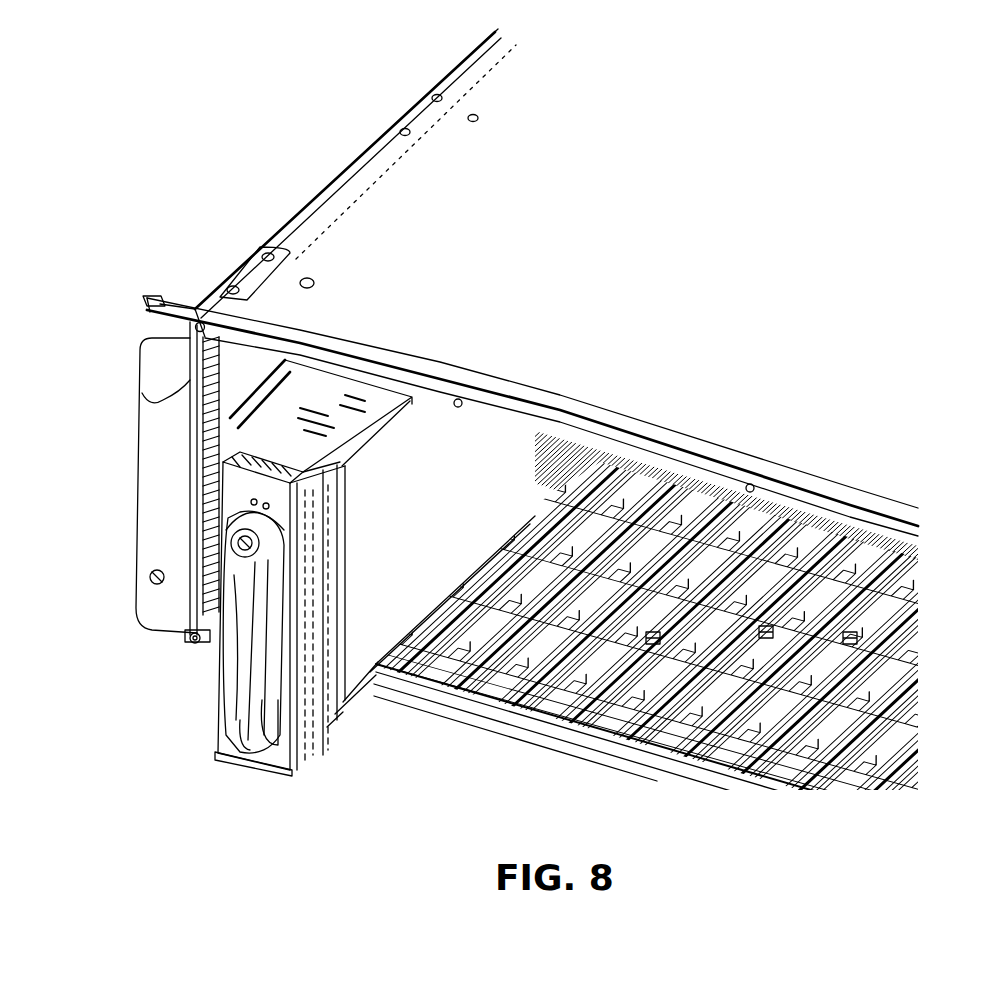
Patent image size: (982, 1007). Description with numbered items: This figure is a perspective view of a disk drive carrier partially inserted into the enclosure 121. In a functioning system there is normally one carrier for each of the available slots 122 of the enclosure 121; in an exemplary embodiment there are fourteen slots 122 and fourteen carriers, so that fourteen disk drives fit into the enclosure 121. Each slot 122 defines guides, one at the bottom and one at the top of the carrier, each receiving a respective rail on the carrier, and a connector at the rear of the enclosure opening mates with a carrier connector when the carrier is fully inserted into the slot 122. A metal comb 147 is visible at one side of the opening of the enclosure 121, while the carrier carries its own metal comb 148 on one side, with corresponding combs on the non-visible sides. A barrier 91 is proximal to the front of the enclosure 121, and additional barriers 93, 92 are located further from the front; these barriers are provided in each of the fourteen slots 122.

The enclosure 121 is at (333, 183).
The metal comb 147 is at (210, 433).
The metal comb 148 is at (310, 730).
The slot 122 is at (520, 690).
The barrier 91 is at (653, 640).
The barrier 93 is at (766, 636).
The barrier 92 is at (850, 640).